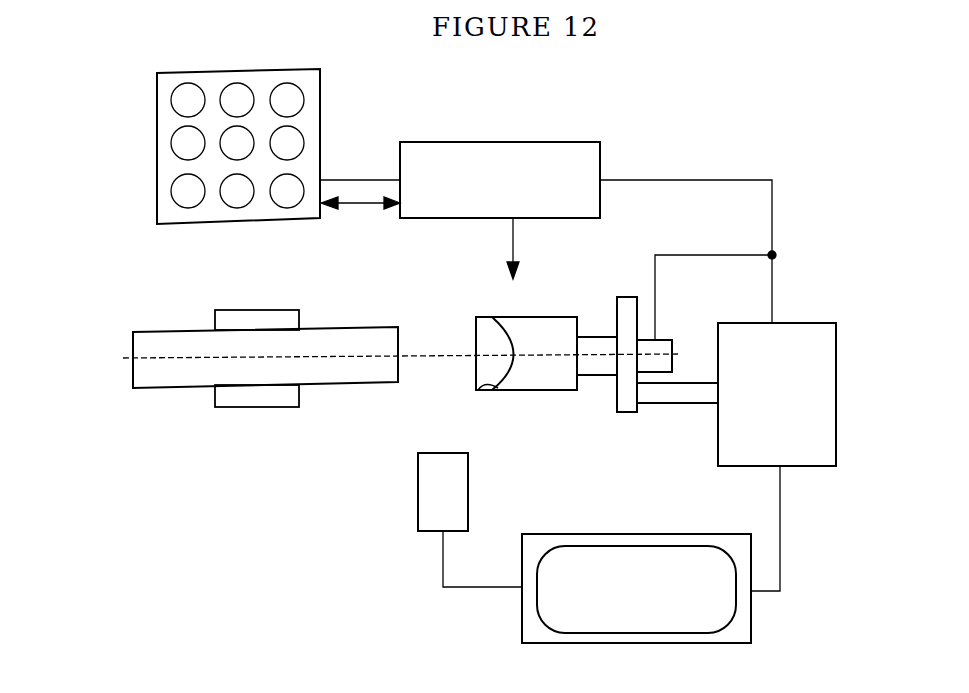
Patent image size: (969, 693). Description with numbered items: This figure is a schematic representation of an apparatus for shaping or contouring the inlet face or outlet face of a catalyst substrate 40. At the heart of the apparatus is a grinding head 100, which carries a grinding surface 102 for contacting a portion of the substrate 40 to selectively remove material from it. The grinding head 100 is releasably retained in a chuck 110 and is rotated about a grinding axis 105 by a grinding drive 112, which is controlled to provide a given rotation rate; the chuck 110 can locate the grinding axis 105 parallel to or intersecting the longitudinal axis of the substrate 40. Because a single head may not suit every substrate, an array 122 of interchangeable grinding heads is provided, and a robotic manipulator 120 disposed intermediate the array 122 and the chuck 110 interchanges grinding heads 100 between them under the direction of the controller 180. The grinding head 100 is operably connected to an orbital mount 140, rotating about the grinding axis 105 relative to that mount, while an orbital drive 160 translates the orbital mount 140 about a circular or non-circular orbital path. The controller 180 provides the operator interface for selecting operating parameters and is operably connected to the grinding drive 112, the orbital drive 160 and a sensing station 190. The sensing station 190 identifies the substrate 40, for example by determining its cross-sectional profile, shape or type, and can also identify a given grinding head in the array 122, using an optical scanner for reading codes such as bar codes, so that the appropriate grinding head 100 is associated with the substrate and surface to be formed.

The substrate 40 is at (143, 382).
The grinding head 100 is at (528, 322).
The grinding surface 102 is at (485, 388).
The grinding axis 105 is at (419, 347).
The chuck 110 is at (597, 367).
The grinding drive 112 is at (663, 345).
The robotic manipulator 120 is at (482, 153).
The array of interchangeable grinding heads 122 is at (157, 95).
The orbital mount 140 is at (627, 302).
The orbital drive 160 is at (815, 357).
The controller 180 is at (742, 633).
The sensing station 190 is at (427, 512).